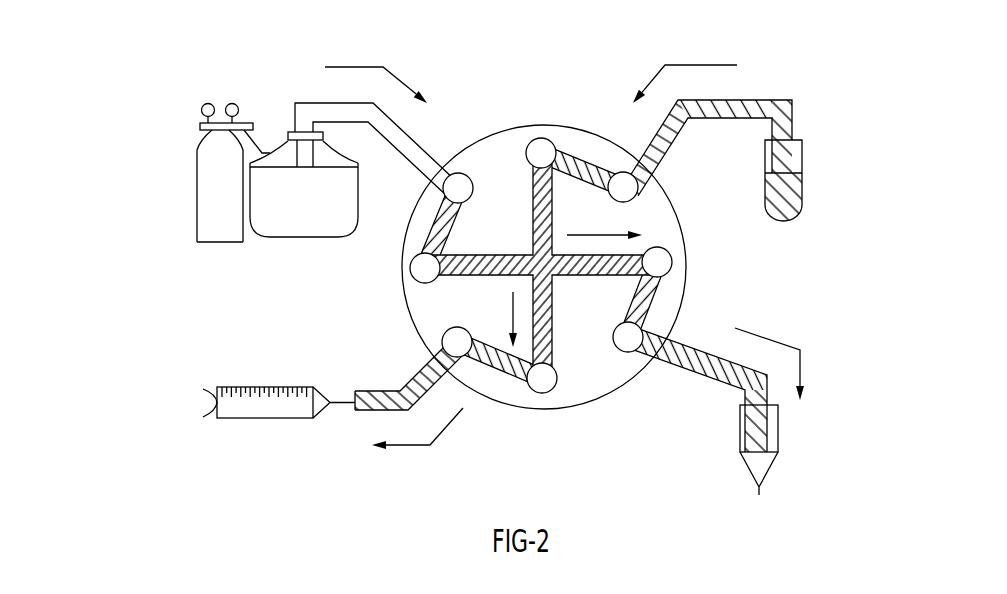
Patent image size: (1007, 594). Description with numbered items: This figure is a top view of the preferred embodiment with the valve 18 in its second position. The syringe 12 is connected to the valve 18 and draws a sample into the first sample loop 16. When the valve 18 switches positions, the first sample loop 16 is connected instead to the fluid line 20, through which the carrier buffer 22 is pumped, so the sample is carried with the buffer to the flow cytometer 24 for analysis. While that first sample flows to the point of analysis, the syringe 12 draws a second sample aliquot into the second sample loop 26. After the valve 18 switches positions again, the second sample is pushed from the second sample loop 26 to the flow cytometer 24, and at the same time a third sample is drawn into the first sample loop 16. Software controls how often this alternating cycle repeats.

The syringe 12 is at (260, 420).
The first sample loop 16 is at (585, 276).
The valve 18 is at (516, 262).
The fluid line 20 is at (682, 344).
The carrier buffer 22 is at (298, 213).
The flow cytometer 24 is at (760, 483).
The second sample loop 26 is at (533, 301).